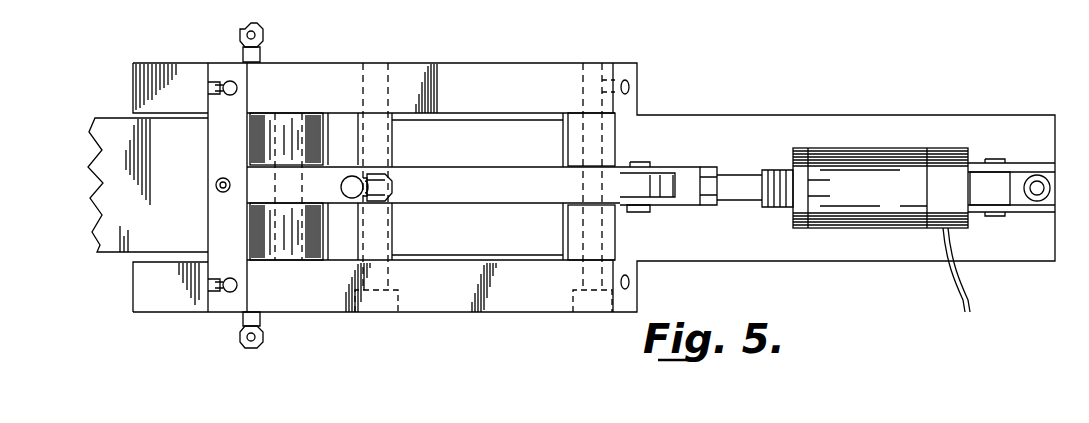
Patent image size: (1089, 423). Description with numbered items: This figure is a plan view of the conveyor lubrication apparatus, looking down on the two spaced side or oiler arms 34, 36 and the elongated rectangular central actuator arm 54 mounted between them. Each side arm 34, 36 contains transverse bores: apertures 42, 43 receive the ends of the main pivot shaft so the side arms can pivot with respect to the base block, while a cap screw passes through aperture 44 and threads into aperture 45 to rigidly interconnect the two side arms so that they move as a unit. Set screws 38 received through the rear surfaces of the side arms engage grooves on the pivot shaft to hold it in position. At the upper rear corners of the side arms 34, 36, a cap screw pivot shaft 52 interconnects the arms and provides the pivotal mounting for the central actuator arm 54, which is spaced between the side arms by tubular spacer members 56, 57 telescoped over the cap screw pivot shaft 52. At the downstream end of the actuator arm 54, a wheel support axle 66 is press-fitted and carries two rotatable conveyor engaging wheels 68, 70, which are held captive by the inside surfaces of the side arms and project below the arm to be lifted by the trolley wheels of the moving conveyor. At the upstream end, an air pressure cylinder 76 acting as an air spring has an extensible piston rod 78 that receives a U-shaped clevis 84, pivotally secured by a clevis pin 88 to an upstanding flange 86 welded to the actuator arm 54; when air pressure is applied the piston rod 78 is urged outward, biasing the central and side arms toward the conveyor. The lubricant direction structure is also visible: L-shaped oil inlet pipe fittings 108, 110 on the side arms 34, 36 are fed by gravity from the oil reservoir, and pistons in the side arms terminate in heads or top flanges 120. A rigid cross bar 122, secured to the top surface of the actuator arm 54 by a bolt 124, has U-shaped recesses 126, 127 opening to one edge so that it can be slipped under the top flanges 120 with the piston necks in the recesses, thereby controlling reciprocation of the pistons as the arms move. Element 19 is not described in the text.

The spacer 19 is at (333, 115).
The side arm 34 is at (350, 296).
The side arm 36 is at (500, 44).
The set screw 38 is at (628, 85).
The transverse bore 42 is at (583, 270).
The transverse bore 43 is at (583, 80).
The transverse bore 44 is at (377, 277).
The threaded aperture 45 is at (395, 75).
The cap screw pivot shaft 52 is at (593, 72).
The central actuator arm 54 is at (492, 195).
The tubular spacer member 56 is at (610, 242).
The tubular spacer member 57 is at (610, 141).
The wheel support axle 66 is at (290, 242).
The conveyor apparatus engaging wheel 68 is at (256, 228).
The conveyor apparatus engaging wheel 70 is at (268, 113).
The air pressure cylinder 76 is at (870, 195).
The piston rod 78 is at (735, 183).
The clevis 84 is at (686, 175).
The upstanding flange 86 is at (640, 185).
The clevis pin 88 is at (637, 212).
The oil inlet pipe fitting 108 is at (243, 338).
The oil inlet pipe fitting 110 is at (242, 43).
The top flange 120 is at (220, 95).
The rigid cross bar 122 is at (218, 155).
The bolt 124 is at (215, 183).
The U-shaped recess 126 is at (208, 285).
The U-shaped recess 127 is at (208, 88).